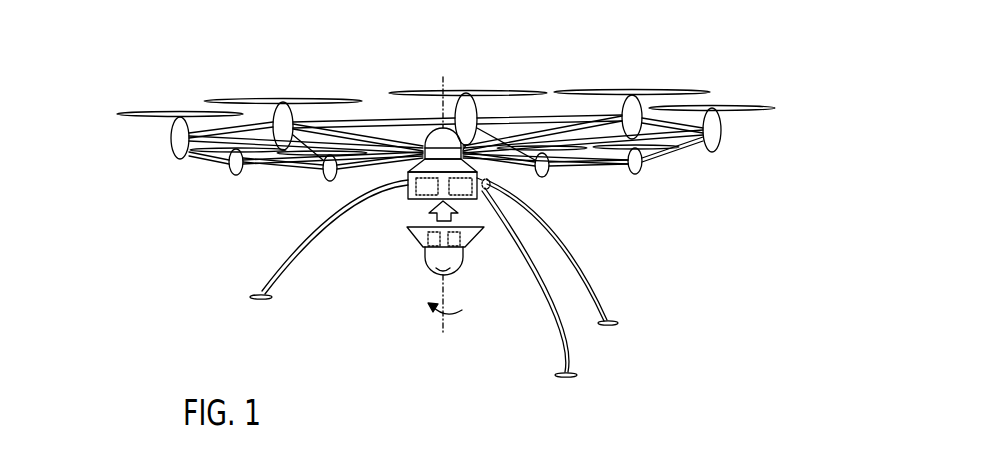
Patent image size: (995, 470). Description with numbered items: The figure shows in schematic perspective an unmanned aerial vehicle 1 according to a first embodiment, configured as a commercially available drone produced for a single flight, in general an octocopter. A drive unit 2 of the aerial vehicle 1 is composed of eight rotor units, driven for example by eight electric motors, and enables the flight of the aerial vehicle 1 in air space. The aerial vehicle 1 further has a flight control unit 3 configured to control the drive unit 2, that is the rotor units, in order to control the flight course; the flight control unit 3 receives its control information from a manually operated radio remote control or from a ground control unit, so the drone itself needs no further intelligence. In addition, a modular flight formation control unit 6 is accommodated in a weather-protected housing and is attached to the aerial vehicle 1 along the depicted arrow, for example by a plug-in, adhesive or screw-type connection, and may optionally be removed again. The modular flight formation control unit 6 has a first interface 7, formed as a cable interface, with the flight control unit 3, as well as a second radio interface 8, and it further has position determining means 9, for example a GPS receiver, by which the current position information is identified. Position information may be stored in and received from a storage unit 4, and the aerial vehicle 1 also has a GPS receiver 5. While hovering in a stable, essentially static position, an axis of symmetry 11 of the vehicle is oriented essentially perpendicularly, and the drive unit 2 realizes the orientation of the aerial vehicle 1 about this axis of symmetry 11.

The unmanned aerial vehicle 1 is at (642, 32).
The drive unit 2 is at (372, 95).
The flight control unit 3 is at (407, 193).
The storage unit 4 is at (481, 182).
The GPS receiver 5 is at (491, 186).
The modular flight formation control unit 6 is at (410, 232).
The first interface 7 is at (426, 241).
The second radio interface 8 is at (465, 249).
The position determining means 9 is at (450, 272).
The axis of symmetry 11 is at (442, 322).